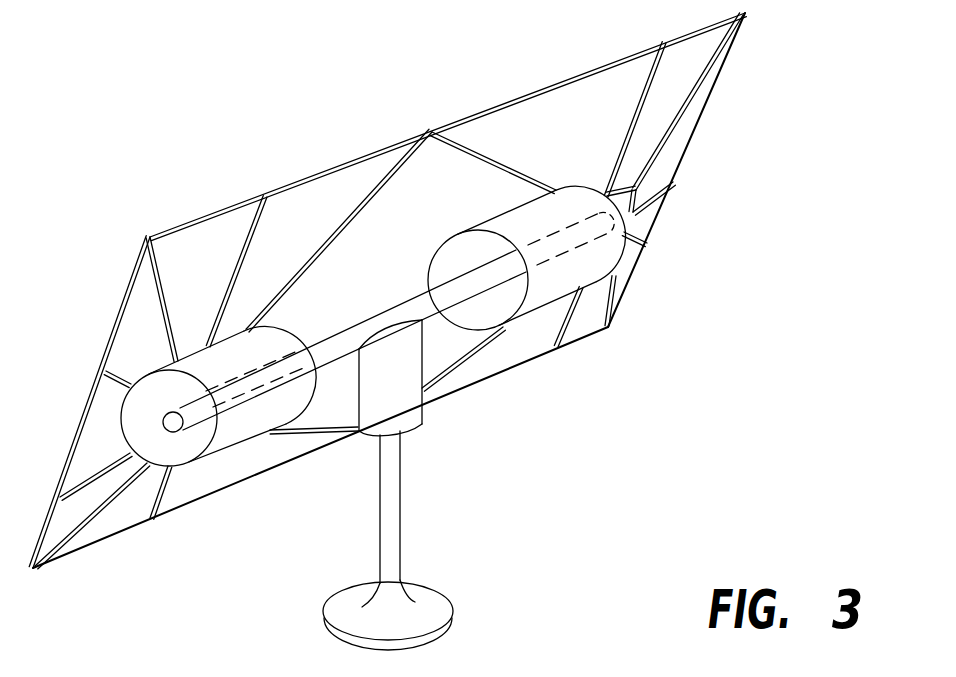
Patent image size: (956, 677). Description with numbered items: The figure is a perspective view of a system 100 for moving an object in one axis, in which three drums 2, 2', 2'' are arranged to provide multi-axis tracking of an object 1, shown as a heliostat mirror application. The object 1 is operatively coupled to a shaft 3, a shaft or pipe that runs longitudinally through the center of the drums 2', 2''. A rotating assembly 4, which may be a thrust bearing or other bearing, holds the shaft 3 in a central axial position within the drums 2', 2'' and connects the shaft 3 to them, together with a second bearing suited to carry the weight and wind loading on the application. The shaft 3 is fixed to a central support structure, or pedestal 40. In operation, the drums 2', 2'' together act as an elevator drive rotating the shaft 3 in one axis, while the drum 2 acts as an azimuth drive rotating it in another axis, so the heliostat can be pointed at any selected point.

The system for moving an object in one axis 100 is at (487, 39).
The object 1 is at (432, 132).
The drum 2 is at (415, 463).
The drum 2' is at (574, 269).
The drum 2'' is at (175, 367).
The shaft 3 is at (397, 320).
The rotating assembly 4 is at (193, 417).
The pedestal 40 is at (453, 612).